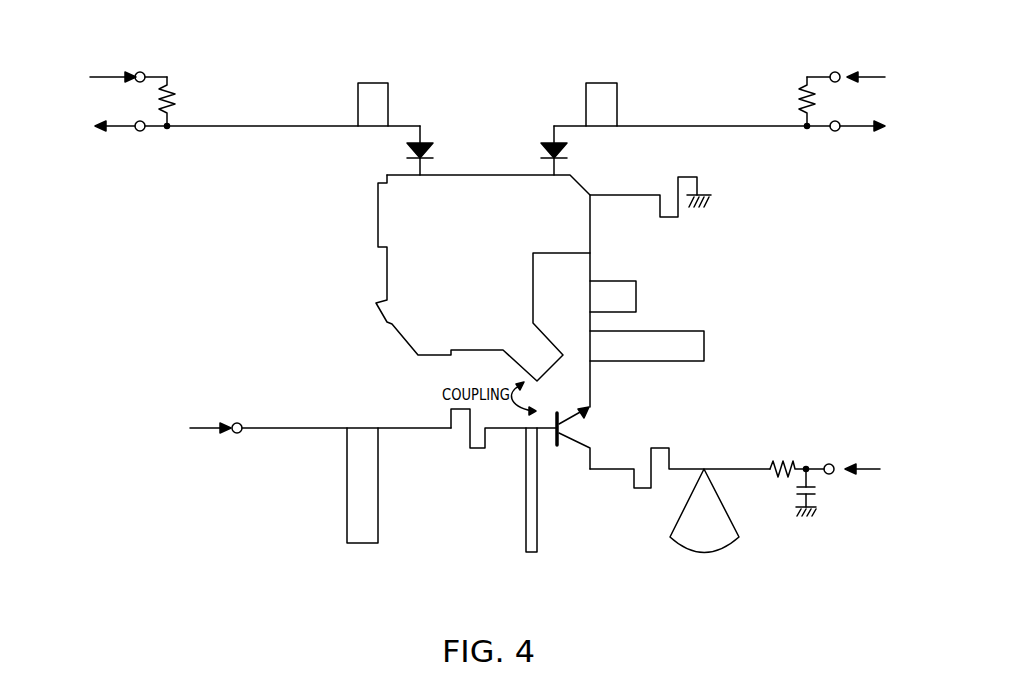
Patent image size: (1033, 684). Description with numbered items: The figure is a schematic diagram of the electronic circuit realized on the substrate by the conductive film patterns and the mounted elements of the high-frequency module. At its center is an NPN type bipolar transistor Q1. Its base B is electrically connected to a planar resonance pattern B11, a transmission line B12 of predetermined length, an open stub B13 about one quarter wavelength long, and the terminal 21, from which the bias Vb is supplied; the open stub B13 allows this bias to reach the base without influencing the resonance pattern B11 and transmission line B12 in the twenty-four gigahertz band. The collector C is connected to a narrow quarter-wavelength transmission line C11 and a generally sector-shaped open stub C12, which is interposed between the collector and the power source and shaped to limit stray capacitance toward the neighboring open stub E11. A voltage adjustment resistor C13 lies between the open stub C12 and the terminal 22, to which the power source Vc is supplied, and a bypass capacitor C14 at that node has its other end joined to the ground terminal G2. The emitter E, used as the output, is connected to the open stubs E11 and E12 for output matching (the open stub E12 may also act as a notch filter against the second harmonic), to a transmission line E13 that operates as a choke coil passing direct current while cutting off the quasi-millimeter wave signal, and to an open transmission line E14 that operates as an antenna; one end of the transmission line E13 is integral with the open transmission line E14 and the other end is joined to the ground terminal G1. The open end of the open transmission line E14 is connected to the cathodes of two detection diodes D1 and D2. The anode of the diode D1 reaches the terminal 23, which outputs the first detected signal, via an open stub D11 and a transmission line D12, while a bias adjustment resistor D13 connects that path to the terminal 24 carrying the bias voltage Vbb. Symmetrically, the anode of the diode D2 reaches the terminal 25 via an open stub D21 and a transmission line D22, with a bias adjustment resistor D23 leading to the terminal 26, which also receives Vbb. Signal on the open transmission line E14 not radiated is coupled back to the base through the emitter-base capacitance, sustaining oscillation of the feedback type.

The terminal 21 is at (235, 434).
The terminal 22 is at (833, 463).
The terminal 23 is at (838, 131).
The terminal 24 is at (838, 71).
The terminal 25 is at (143, 131).
The terminal 26 is at (137, 71).
The diode D1 is at (548, 143).
The diode D2 is at (433, 143).
The open stub D11 is at (602, 82).
The transmission line D12 is at (695, 125).
The bias adjustment resistor D13 is at (798, 98).
The open stub D21 is at (373, 83).
The transmission line D22 is at (268, 125).
The bias adjustment resistor D23 is at (176, 99).
The open stub E11 is at (704, 346).
The open stub E12 is at (637, 296).
The transmission line E13 is at (688, 177).
The open transmission line E14 is at (387, 276).
The ground terminal G1 is at (712, 194).
The ground terminal G2 is at (797, 508).
The resonance pattern B11 is at (526, 538).
The transmission line B12 is at (479, 452).
The open stub B13 is at (347, 534).
The transmission line C11 is at (641, 490).
The open stub C12 is at (728, 553).
The voltage adjustment resistor C13 is at (783, 460).
The bypass capacitor C14 is at (818, 493).
The bipolar transistor Q1 is at (578, 451).